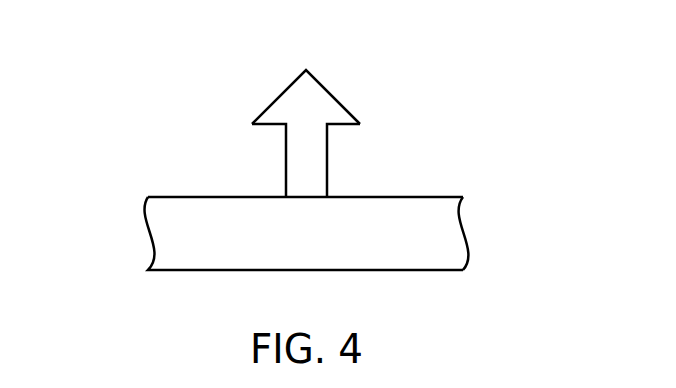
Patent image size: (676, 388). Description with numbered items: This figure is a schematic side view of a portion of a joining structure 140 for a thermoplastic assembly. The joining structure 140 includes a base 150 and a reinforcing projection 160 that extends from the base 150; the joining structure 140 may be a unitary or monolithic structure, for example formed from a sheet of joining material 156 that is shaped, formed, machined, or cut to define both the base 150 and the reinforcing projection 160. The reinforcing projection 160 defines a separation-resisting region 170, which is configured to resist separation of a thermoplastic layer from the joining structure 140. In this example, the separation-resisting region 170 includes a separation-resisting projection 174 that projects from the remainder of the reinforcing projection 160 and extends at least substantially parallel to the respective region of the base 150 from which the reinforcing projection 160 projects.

The joining structure 140 is at (132, 236).
The base 150 is at (193, 195).
The sheet of joining material 156 is at (470, 260).
The reinforcing projection 160 is at (331, 104).
The separation-resisting region 170 is at (345, 128).
The separation-resisting projection 174 is at (343, 103).